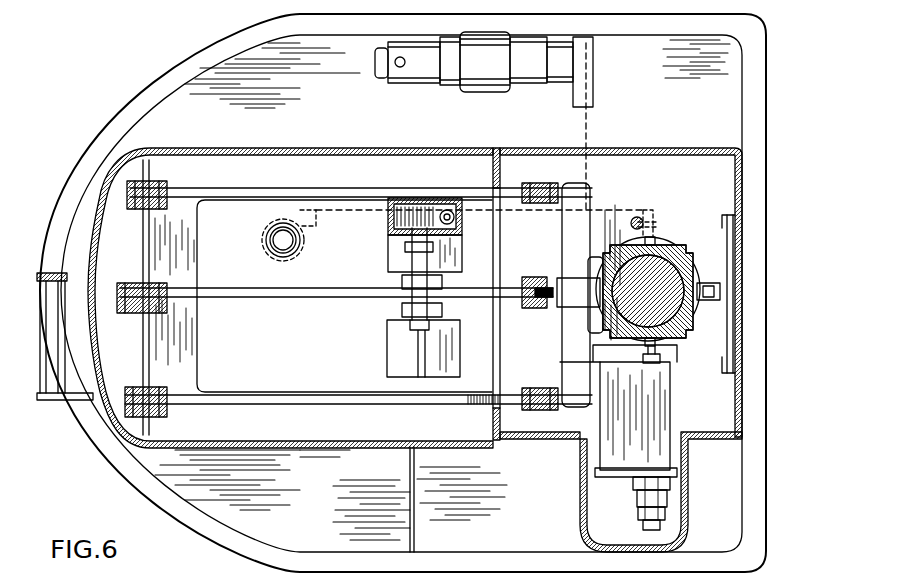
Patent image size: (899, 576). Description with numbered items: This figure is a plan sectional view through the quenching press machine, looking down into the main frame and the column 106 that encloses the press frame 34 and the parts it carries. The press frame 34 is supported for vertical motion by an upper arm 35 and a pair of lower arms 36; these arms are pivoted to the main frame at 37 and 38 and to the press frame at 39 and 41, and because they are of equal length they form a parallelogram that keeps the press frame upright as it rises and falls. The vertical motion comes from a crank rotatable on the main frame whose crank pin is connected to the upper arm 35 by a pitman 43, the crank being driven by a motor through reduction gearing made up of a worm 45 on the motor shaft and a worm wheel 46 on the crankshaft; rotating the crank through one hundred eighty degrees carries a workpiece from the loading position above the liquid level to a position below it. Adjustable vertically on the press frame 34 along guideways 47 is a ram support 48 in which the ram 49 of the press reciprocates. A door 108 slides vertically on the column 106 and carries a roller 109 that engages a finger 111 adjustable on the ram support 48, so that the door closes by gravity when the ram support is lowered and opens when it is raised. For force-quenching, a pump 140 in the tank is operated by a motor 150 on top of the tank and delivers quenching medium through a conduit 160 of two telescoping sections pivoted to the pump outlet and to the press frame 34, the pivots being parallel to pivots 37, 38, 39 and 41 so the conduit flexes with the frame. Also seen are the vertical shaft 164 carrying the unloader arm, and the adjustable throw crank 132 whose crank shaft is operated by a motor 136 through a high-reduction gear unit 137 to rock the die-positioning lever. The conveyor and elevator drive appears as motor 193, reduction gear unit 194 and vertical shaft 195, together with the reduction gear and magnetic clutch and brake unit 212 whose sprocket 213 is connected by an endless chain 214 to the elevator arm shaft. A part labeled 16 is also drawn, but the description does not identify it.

The press frame 34 is at (176, 66).
The column 106 is at (739, 168).
The lower arms 36 is at (218, 194).
The upper arm 35 is at (261, 299).
The pivot of upper arm on main frame 37 is at (150, 281).
The pivot of lower arms on main frame 38 is at (157, 209).
The motor 150 is at (264, 233).
The pump 140 is at (311, 238).
The conduit 160 is at (340, 206).
The vertical shaft 164 is at (655, 206).
The worm wheel 46 is at (420, 197).
The worm 45 is at (447, 197).
The pitman 43 is at (410, 306).
The pivot of lower arms on press frame 41 is at (535, 184).
The pivot of upper arm on press frame 39 is at (535, 278).
The guideways 47 is at (667, 245).
The ram 49 is at (660, 301).
The roller 109 is at (718, 288).
The finger 111 is at (715, 300).
The ram support 48 is at (733, 335).
The door 108 is at (733, 226).
The pin 16 is at (660, 360).
The adjustable throw crank 132 is at (665, 380).
The high-reduction gear unit 137 is at (606, 477).
The motor 136 is at (640, 500).
The motor 193 is at (486, 77).
The reduction gear unit 194 is at (410, 77).
The vertical shaft 195 is at (381, 72).
The reduction gear and magnetic clutch and brake unit 212 is at (557, 68).
The sprocket 213 is at (596, 55).
The endless chain 214 is at (598, 132).